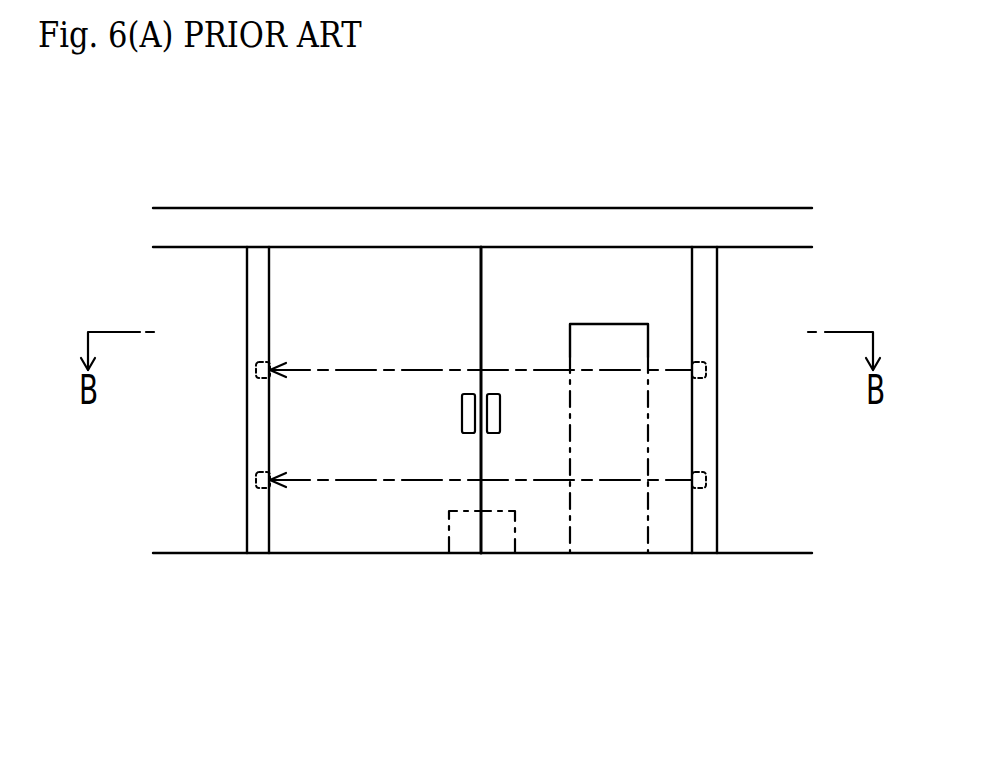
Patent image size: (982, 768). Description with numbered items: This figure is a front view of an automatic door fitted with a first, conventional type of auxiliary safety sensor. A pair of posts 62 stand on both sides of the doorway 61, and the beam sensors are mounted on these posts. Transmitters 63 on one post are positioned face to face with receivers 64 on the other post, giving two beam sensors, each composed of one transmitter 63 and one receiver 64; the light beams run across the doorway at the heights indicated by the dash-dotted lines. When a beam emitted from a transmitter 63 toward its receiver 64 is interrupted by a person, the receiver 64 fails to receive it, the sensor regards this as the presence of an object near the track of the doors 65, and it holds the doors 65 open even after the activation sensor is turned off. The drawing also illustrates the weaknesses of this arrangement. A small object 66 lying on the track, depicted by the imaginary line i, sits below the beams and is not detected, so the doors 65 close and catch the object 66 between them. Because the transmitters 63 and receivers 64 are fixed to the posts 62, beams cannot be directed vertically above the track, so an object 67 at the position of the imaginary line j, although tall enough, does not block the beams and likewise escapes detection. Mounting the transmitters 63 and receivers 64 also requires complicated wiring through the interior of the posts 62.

The doorway 61 is at (606, 265).
The post 62 is at (247, 306).
The transmitter 63 is at (706, 368).
The receiver 64 is at (256, 366).
The door 65 is at (514, 283).
The object 66 is at (492, 546).
The object 67 is at (618, 545).
The imaginary line i is at (515, 525).
The imaginary line j is at (648, 497).